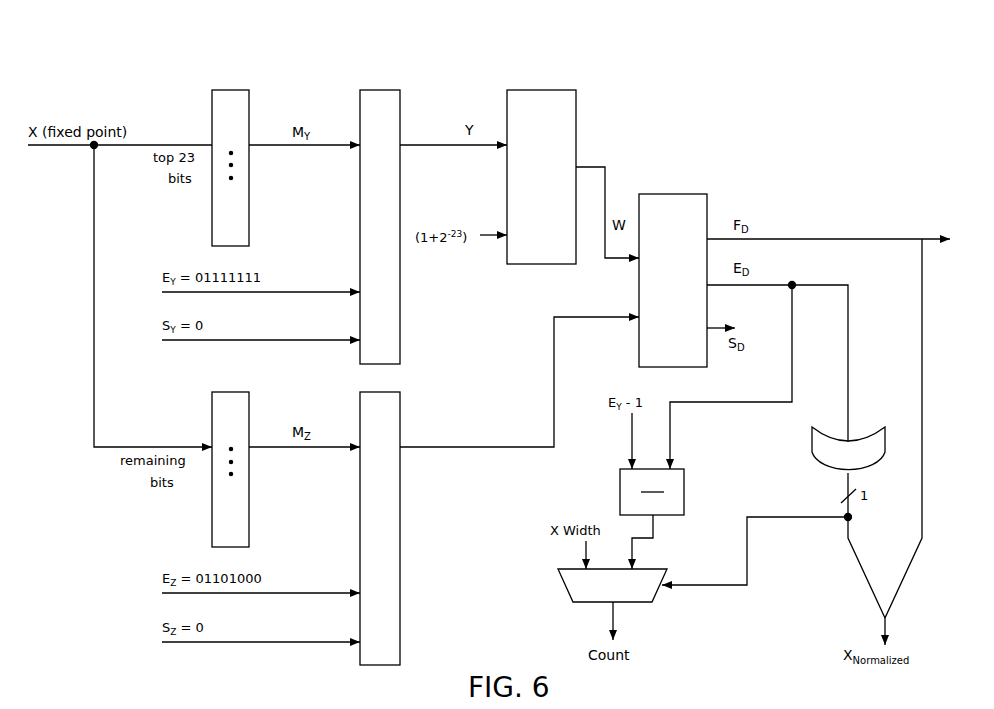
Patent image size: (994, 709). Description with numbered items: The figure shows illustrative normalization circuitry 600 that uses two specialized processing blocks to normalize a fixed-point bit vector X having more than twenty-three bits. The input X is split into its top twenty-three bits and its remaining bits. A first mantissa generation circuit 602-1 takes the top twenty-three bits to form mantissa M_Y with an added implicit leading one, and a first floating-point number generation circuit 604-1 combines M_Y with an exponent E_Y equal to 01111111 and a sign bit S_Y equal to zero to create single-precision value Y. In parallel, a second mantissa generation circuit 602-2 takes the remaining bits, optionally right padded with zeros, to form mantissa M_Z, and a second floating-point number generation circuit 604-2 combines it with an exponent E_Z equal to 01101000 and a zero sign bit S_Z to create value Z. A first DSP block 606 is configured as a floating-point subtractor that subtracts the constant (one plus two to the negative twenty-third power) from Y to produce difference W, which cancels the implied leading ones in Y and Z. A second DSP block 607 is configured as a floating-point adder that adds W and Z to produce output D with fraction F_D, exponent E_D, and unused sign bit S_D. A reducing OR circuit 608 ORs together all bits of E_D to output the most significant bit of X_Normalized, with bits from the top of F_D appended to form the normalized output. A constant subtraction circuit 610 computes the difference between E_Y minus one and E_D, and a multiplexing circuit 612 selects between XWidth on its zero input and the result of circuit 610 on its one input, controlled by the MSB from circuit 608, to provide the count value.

The normalization circuitry 600 is at (791, 79).
The first mantissa generation circuit 602-1 is at (231, 90).
The second mantissa generation circuit 602-2 is at (212, 523).
The first floating-point number generation circuit 604-1 is at (380, 90).
The second floating-point number generation circuit 604-2 is at (400, 633).
The first DSP block 606 is at (541, 90).
The second DSP block 607 is at (671, 194).
The reducing OR circuit 608 is at (812, 440).
The constant subtraction circuit 610 is at (684, 492).
The multiplexing circuit 612 is at (560, 587).